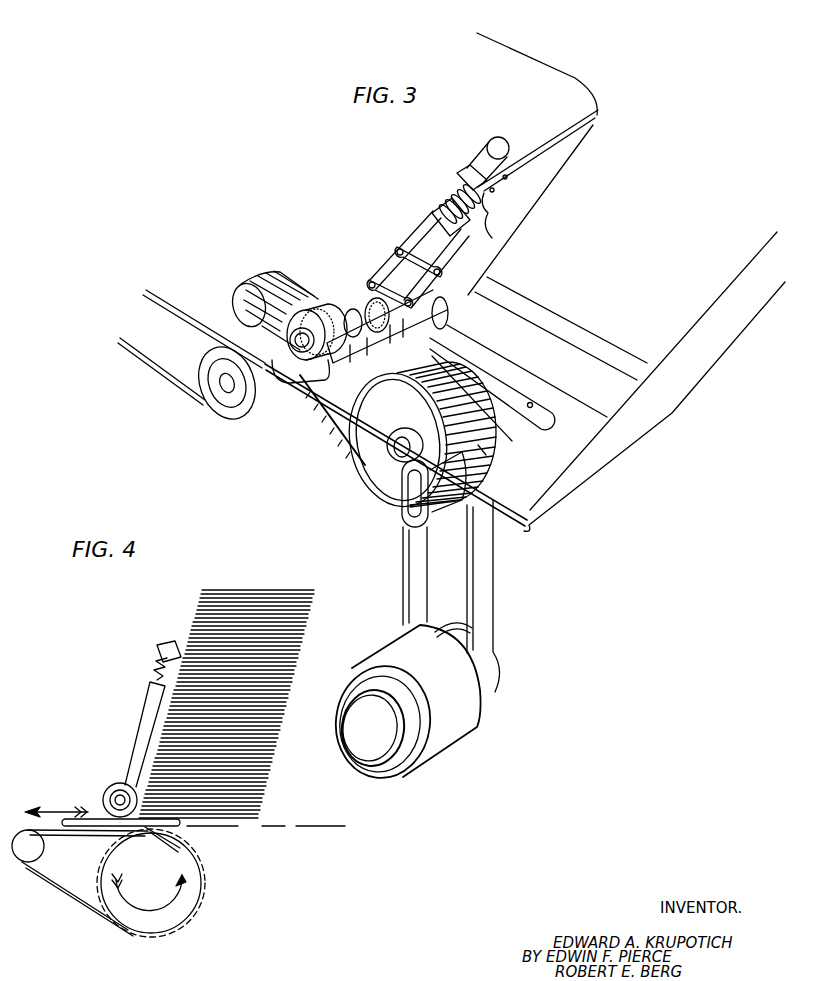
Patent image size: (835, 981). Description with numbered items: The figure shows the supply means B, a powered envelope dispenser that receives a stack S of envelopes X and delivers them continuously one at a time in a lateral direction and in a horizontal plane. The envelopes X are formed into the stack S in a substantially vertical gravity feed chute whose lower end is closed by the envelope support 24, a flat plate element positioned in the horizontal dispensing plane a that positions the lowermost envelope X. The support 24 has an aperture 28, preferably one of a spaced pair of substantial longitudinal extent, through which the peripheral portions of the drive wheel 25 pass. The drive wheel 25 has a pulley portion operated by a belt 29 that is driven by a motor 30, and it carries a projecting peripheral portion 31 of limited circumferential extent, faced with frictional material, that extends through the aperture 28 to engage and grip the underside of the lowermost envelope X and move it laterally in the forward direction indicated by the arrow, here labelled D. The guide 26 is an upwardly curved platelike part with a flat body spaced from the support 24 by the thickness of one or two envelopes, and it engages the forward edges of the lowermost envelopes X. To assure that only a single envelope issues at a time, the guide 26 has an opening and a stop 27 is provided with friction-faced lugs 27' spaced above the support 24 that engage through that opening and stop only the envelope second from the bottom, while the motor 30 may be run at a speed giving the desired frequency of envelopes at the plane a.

In FIG. 3, the envelope support 24 is at (547, 465).
In FIG. 3, the drive wheel 25 is at (388, 466).
In FIG. 4, the drive wheel 25 is at (196, 918).
In FIG. 3, the guide 26 is at (445, 311).
In FIG. 3, the stop 27 is at (261, 310).
In FIG. 4, the stop 27 is at (85, 792).
In FIG. 3, the lugs 27' is at (338, 309).
In FIG. 4, the lugs 27' is at (134, 714).
In FIG. 3, the aperture 28 is at (532, 406).
In FIG. 3, the belt 29 is at (496, 562).
In FIG. 3, the motor 30 is at (405, 704).
In FIG. 3, the projecting peripheral portion 31 is at (483, 447).
In FIG. 4, the projecting peripheral portion 31 is at (134, 835).
In FIG. 3, the delivery belt direction D is at (146, 303).
In FIG. 3, the supply means B is at (326, 441).
In FIG. 4, the supply means B is at (218, 885).
In FIG. 4, the envelope X is at (288, 585).
In FIG. 3, the stack S is at (304, 644).
In FIG. 4, the horizontal dispensing plane a is at (321, 826).